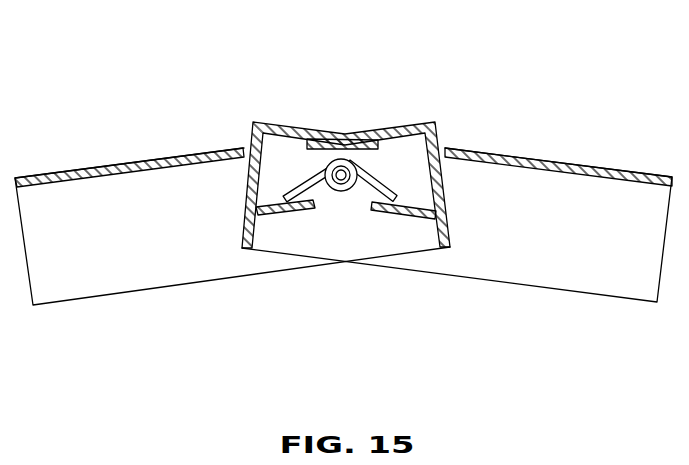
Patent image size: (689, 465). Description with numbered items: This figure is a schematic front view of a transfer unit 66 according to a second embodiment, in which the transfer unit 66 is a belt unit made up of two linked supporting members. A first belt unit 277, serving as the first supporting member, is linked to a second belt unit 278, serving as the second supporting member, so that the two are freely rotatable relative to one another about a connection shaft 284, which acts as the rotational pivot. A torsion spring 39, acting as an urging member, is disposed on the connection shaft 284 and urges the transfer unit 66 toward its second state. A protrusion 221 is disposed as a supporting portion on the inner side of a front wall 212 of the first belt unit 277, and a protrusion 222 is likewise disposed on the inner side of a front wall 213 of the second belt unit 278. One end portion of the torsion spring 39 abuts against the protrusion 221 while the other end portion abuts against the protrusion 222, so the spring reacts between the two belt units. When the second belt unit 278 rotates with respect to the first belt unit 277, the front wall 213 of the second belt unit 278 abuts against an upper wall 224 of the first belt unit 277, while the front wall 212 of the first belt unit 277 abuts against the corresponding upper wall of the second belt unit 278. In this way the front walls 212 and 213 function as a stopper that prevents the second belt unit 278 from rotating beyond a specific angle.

The upper wall 224 is at (232, 178).
The first belt unit 277 is at (196, 150).
The transfer unit 66 is at (349, 181).
The torsion spring 39 is at (366, 162).
The second belt unit 278 is at (487, 144).
The front wall 213 is at (240, 207).
The protrusion 222 is at (280, 213).
The connection shaft 284 is at (342, 178).
The protrusion 221 is at (409, 214).
The front wall 212 is at (448, 207).